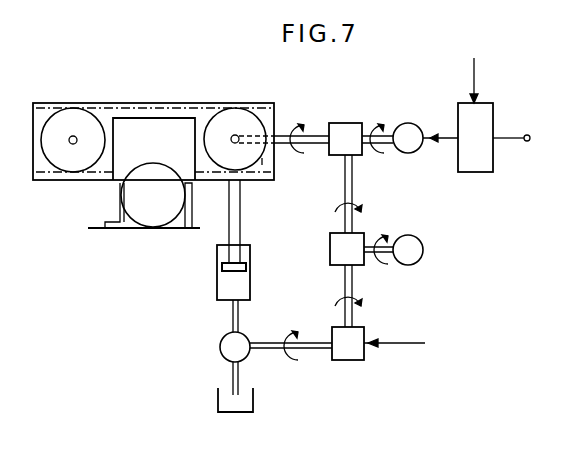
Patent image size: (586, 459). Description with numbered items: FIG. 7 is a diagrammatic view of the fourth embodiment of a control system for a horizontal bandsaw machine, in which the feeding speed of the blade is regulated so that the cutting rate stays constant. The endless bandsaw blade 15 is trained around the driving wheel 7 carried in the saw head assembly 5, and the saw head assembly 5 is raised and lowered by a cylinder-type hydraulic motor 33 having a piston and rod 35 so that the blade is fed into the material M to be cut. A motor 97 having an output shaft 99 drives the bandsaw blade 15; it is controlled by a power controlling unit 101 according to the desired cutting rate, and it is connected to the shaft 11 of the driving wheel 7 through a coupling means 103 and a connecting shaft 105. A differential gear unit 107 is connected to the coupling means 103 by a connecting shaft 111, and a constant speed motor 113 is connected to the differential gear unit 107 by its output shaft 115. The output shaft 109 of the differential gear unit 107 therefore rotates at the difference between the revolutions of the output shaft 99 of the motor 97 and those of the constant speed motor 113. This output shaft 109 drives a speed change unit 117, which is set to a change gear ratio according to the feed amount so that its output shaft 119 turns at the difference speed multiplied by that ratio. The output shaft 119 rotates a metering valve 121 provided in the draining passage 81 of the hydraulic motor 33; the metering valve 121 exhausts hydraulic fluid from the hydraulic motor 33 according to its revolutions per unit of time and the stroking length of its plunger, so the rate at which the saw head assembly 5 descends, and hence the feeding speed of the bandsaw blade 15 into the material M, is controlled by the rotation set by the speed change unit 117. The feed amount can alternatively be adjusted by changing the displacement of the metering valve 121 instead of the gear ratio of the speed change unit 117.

The saw head assembly 5 is at (219, 104).
The driving wheel 7 is at (262, 160).
The shaft 11 is at (238, 133).
The bandsaw blade 15 is at (150, 103).
The hydraulic motor 33 is at (217, 283).
The piston and rod 35 is at (239, 212).
The draining passage 81 is at (232, 322).
The motor 97 is at (408, 127).
The output shaft 99 is at (381, 128).
The power controlling unit 101 is at (488, 118).
The coupling means 103 is at (353, 152).
The connecting shaft 105 is at (318, 136).
The differential gear unit 107 is at (335, 253).
The output shaft 109 is at (355, 305).
The connecting shaft 111 is at (354, 208).
The constant speed motor 113 is at (410, 258).
The output shaft 115 is at (386, 240).
The speed change unit 117 is at (347, 353).
The output shaft 119 is at (303, 354).
The metering valve 121 is at (228, 352).
The material M is at (138, 230).